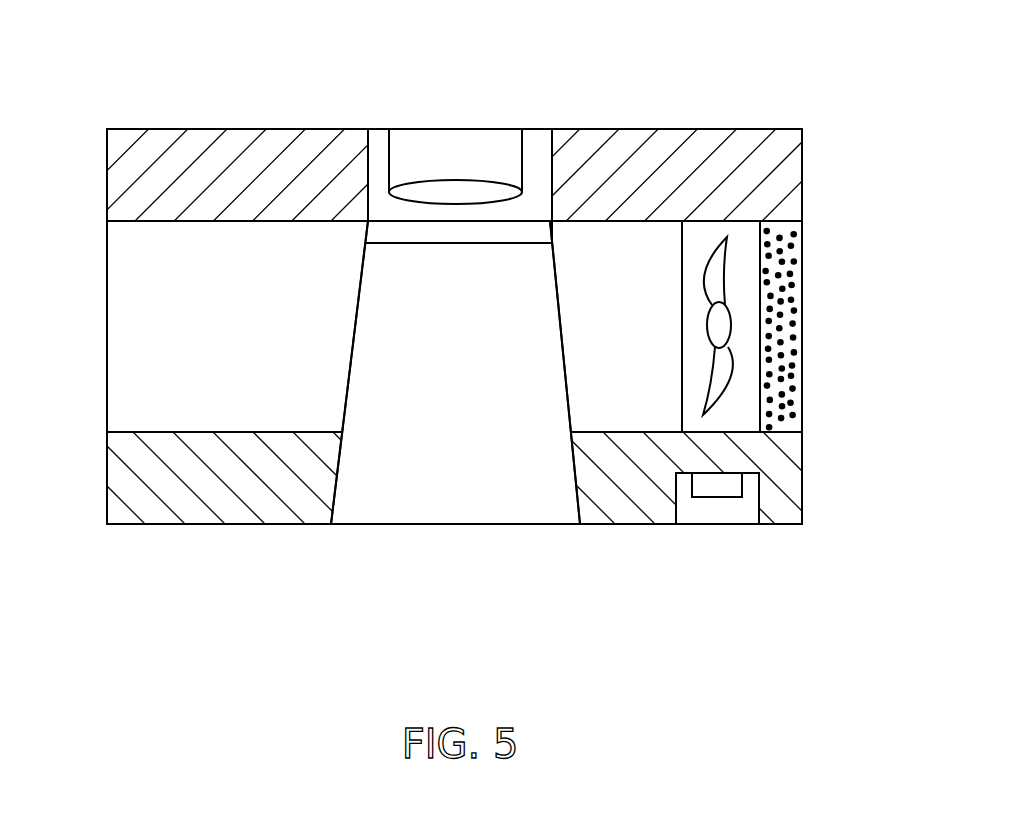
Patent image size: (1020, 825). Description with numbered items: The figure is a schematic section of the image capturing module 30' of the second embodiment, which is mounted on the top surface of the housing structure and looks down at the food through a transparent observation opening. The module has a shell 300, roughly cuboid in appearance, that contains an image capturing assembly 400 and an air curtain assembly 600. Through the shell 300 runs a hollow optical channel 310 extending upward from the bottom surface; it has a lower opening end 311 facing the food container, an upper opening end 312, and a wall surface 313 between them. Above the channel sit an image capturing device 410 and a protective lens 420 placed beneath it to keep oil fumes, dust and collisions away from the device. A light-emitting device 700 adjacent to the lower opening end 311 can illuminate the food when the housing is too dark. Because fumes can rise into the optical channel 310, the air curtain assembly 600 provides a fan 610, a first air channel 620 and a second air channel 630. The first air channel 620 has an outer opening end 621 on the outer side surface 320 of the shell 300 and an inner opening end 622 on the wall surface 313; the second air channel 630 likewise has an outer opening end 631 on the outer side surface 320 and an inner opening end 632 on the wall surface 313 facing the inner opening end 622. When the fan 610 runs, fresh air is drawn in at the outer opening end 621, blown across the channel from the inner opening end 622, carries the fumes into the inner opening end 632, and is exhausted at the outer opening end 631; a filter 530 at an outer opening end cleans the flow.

The image capturing module 30' is at (98, 58).
The shell 300 is at (716, 129).
The optical channel 310 is at (378, 292).
The lower opening end 311 is at (342, 525).
The upper opening end 312 is at (533, 237).
The wall surface 313 is at (575, 475).
The outer side surface 320 is at (788, 129).
The image capturing assembly 400 is at (462, 148).
The image capturing device 410 is at (427, 192).
The protective lens 420 is at (382, 236).
The filter 530 is at (770, 241).
The air curtain assembly 600 is at (645, 410).
The fan 610 is at (715, 322).
The first air channel 620 is at (657, 257).
The outer opening end 621 is at (803, 367).
The inner opening end 622 is at (567, 367).
The second air channel 630 is at (152, 302).
The outer opening end 631 is at (107, 403).
The inner opening end 632 is at (348, 385).
The light-emitting device 700 is at (723, 485).